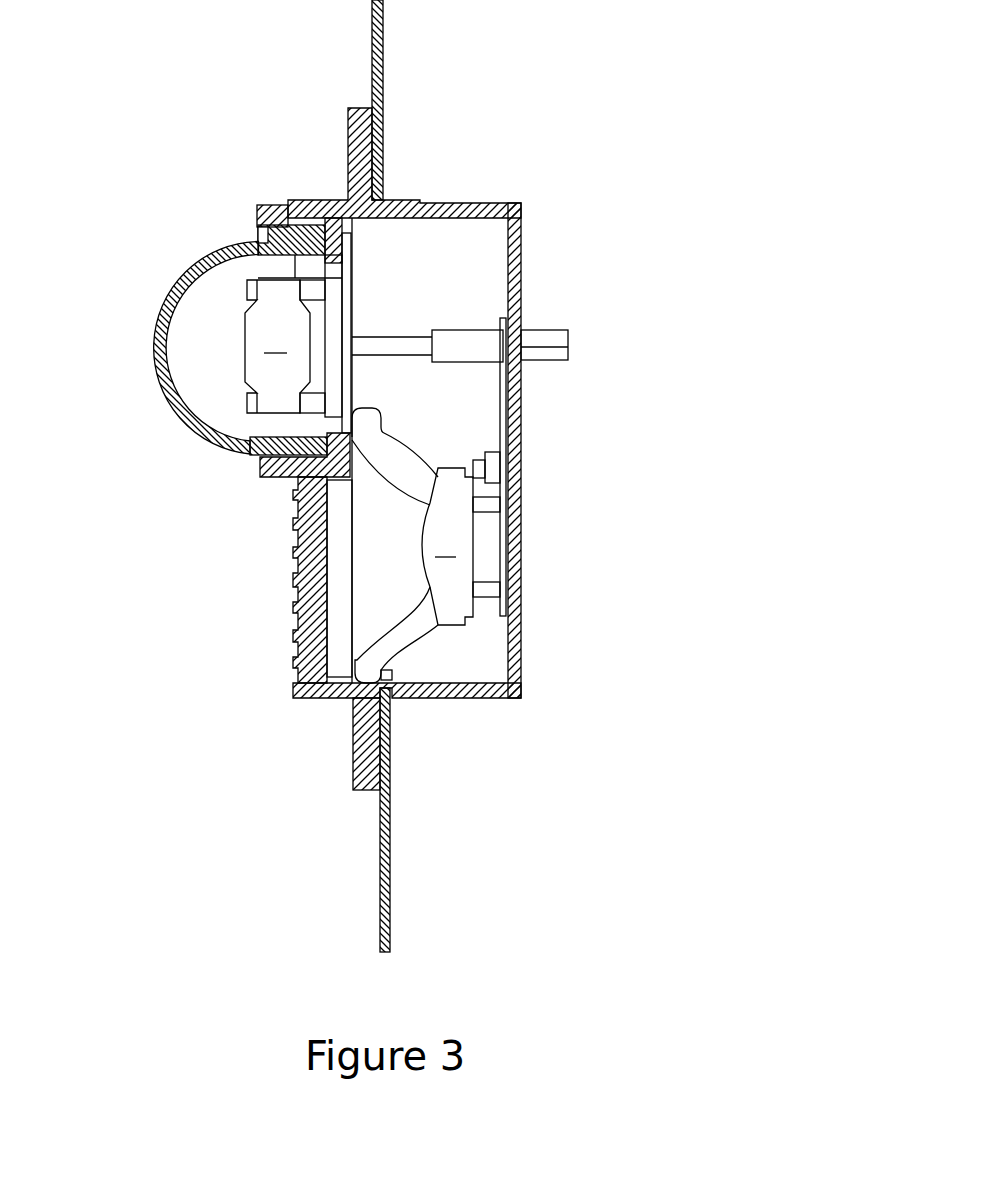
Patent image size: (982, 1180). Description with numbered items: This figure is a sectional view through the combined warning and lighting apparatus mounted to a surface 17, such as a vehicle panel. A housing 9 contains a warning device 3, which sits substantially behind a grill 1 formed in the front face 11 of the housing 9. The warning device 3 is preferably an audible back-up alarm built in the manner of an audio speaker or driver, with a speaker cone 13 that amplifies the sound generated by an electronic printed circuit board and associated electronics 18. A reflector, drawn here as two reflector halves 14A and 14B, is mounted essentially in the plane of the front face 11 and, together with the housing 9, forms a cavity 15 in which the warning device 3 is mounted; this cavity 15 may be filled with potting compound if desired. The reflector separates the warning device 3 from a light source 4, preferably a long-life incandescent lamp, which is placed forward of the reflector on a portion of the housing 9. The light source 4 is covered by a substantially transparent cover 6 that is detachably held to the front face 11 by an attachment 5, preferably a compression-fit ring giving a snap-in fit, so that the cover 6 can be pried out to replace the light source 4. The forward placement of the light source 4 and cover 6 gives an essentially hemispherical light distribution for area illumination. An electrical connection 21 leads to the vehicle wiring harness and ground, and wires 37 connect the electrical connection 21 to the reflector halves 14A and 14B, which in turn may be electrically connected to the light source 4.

The grill 1 is at (290, 578).
The warning device 3 is at (461, 538).
The light source 4 is at (293, 334).
The attachment 5 is at (257, 235).
The transparent cover 6 is at (165, 292).
The housing 9 is at (470, 205).
The front face 11 is at (313, 700).
The speaker cone 13 is at (408, 637).
The reflector half 14A is at (335, 418).
The reflector half 14B is at (352, 287).
The cavity 15 is at (453, 392).
The surface 17 is at (383, 28).
The printed circuit board and associated electronics 18 is at (490, 562).
The electrical connection 21 is at (575, 342).
The wires 37 is at (405, 337).